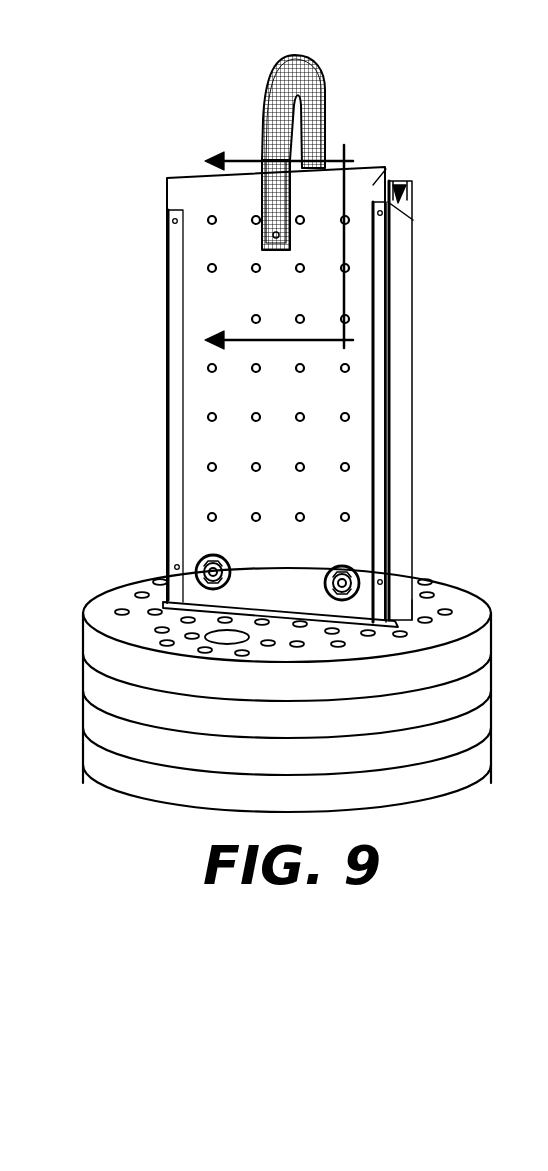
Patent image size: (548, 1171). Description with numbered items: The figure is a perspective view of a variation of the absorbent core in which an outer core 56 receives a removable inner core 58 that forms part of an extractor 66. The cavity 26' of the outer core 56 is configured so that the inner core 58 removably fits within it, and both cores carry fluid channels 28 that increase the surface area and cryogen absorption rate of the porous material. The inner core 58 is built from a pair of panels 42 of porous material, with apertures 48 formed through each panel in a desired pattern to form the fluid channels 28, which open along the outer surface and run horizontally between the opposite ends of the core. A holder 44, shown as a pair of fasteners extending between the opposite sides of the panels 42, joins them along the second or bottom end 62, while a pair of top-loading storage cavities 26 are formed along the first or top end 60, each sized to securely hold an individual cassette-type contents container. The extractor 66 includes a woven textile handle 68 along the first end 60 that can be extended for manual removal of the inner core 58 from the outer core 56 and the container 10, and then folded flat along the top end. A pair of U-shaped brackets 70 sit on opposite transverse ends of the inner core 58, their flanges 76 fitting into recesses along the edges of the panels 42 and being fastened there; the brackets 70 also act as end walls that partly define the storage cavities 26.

The container 10 is at (274, 235).
The storage cavities 26 is at (422, 358).
The cavity 26' is at (441, 562).
The fluid channels 28 is at (210, 417).
The panels 42 is at (398, 198).
The holder 44 is at (231, 572).
The apertures 48 is at (260, 467).
The outer core 56 is at (93, 684).
The inner core 58 is at (181, 254).
The first end 60 is at (178, 185).
The second end 62 is at (192, 592).
The extractor 66 is at (338, 127).
The handle 68 is at (263, 88).
The brackets 70 is at (413, 322).
The flanges 76 is at (382, 242).